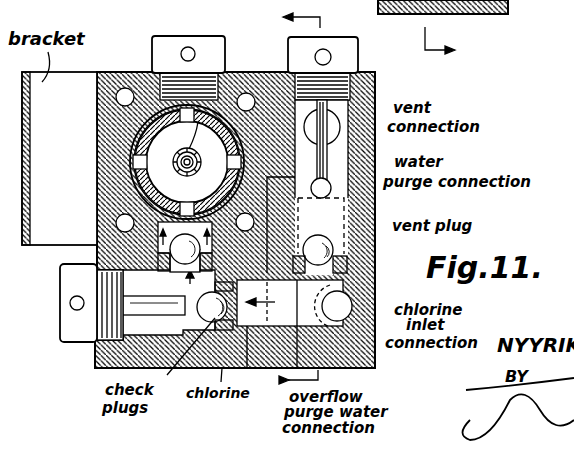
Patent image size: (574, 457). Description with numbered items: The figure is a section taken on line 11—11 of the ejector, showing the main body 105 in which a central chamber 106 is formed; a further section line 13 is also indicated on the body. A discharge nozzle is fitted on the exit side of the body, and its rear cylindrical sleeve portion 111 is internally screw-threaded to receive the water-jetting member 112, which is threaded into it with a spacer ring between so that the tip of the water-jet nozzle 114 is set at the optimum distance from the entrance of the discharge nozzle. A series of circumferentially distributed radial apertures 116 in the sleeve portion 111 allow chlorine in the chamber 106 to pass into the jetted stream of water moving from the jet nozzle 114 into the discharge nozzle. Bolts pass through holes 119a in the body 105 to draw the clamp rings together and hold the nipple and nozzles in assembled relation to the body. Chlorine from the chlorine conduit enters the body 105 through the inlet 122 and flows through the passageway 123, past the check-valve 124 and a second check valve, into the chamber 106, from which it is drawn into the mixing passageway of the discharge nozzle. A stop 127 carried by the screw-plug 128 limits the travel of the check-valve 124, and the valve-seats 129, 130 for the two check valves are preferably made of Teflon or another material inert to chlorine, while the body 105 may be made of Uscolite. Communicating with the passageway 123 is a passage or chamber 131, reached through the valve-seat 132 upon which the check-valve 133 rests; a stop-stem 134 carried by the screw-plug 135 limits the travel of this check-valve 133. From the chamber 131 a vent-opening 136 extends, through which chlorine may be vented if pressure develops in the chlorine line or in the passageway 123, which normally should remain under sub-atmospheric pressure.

The main body 105 is at (376, 366).
The central chamber 106 is at (160, 229).
The rear cylindrical sleeve portion 111 is at (98, 113).
The water-jetting member 112 is at (226, 125).
The water-jet nozzle 114 is at (180, 162).
The radial apertures 116 is at (140, 190).
The holes 119a is at (126, 92).
The inlet 122 is at (345, 303).
The passageway 123 is at (170, 248).
The check-valve 124 is at (200, 312).
The stop 127 is at (163, 303).
The screw-plug 128 is at (80, 323).
The valve-seat 129 is at (200, 345).
The valve-seat 130 is at (200, 252).
The chamber 131 is at (317, 239).
The valve-seat 132 is at (333, 258).
The check-valve 133 is at (322, 245).
The stop-stem 134 is at (330, 157).
The screw-plug 135 is at (357, 63).
The vent-opening 136 is at (335, 118).
The section line 13 is at (287, 201).
The section line 11 is at (452, 45).